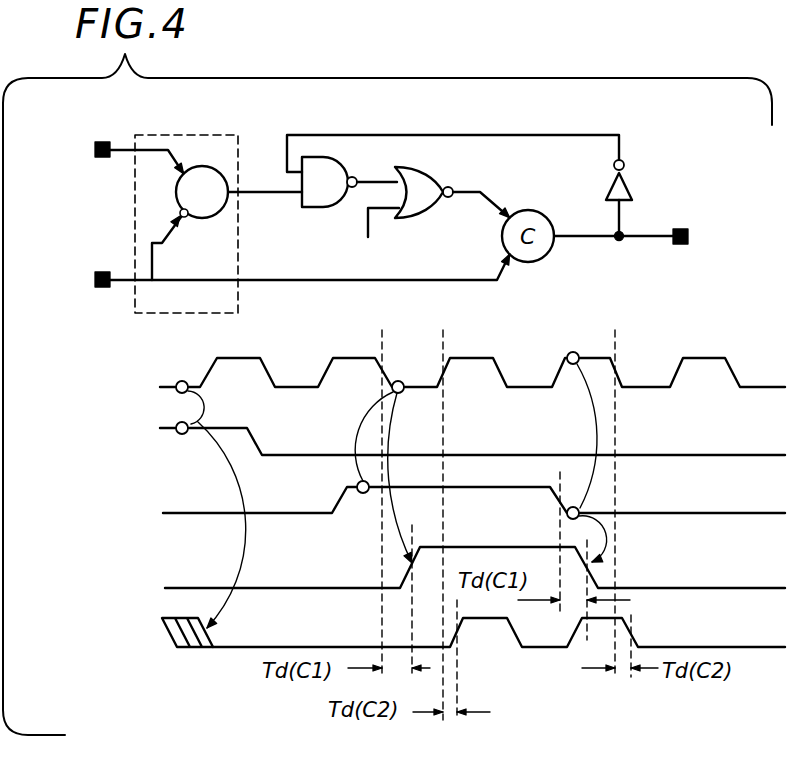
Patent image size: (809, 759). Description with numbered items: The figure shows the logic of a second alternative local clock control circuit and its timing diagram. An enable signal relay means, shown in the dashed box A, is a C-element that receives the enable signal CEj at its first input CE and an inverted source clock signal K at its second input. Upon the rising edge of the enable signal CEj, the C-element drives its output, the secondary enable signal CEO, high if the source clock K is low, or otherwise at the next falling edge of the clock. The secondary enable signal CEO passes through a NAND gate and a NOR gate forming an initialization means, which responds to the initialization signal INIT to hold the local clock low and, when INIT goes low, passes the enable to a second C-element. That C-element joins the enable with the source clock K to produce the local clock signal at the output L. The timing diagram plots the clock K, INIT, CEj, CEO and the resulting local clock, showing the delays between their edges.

The enable signal relay means box A is at (186, 206).
The enable signal input CE is at (117, 156).
The secondary enable signal CEO is at (265, 207).
The initialization signal INIT is at (390, 243).
The local clock output L is at (634, 237).
The source clock signal K is at (457, 500).
The enable signal CEj is at (150, 433).